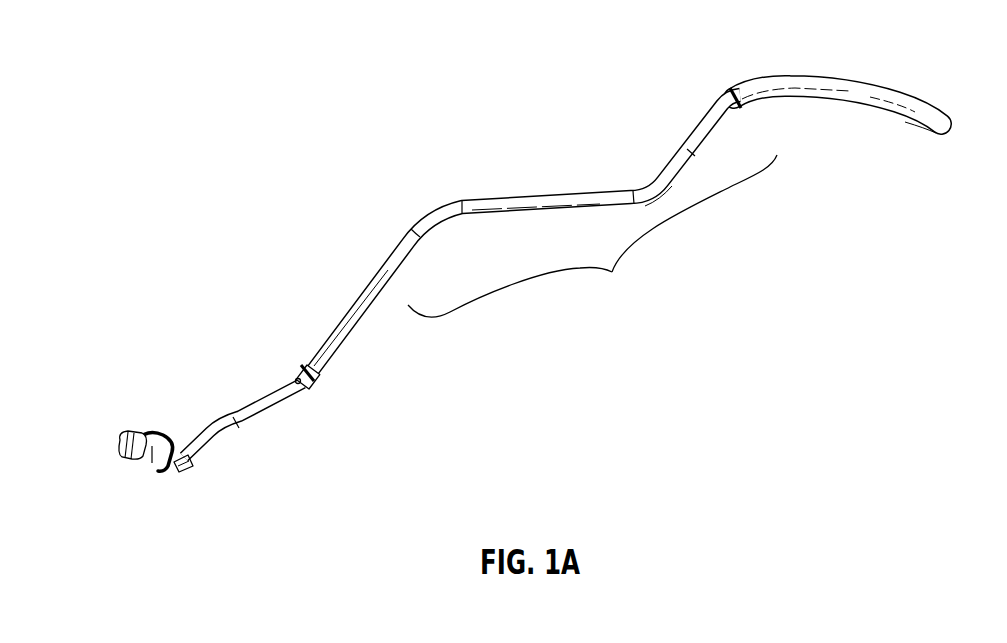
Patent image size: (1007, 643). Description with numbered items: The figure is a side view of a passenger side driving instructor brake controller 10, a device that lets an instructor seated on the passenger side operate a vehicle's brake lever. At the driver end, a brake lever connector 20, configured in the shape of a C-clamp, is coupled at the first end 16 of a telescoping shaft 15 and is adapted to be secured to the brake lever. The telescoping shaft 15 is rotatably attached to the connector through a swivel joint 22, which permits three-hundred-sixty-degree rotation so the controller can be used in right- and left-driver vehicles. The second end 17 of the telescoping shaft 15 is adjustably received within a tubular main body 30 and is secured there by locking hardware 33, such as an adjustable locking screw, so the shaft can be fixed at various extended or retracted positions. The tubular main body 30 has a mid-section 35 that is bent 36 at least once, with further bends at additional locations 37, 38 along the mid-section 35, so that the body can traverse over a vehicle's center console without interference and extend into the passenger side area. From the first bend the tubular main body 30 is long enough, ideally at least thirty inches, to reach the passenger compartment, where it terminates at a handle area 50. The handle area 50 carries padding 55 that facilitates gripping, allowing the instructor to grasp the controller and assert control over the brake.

The passenger side driving instructor brake controller 10 is at (266, 106).
The telescoping shaft 15 is at (228, 437).
The first end 16 is at (179, 429).
The second end 17 is at (280, 390).
The brake lever connector 20 is at (147, 456).
The swivel joint 22 is at (177, 473).
The tubular main body 30 is at (533, 197).
The locking hardware 33 is at (320, 378).
The mid-section 35 is at (612, 272).
The bend 36 is at (436, 199).
The additional bend location 37 is at (631, 177).
The additional bend location 38 is at (710, 63).
The handle area 50 is at (845, 117).
The padding 55 is at (787, 86).